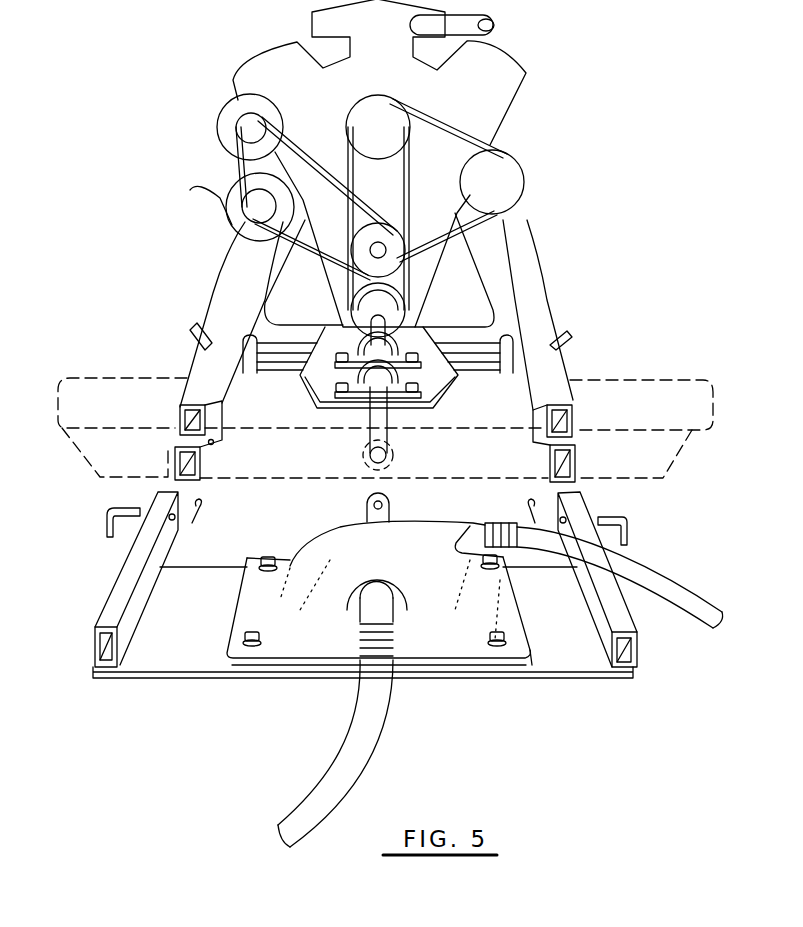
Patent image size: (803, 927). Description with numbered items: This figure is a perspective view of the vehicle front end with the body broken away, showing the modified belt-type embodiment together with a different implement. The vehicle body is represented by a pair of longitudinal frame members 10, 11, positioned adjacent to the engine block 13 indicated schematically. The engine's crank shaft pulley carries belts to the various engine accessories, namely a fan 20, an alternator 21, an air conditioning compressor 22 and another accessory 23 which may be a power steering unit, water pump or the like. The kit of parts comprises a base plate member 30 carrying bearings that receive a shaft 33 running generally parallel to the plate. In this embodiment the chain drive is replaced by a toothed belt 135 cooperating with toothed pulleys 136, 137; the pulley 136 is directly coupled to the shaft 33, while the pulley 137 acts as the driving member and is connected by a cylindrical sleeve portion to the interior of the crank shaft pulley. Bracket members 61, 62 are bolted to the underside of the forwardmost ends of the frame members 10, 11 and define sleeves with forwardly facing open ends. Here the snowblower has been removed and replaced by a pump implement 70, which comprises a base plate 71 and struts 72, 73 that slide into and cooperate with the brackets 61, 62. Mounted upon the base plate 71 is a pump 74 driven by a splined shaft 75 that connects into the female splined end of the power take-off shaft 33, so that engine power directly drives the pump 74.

The longitudinal frame member 10 is at (233, 275).
The longitudinal frame member 11 is at (522, 277).
The engine block 13 is at (490, 78).
The fan 20 is at (365, 117).
The alternator 21 is at (231, 208).
The air conditioning compressor 22 is at (223, 125).
The accessory 23 is at (505, 184).
The base plate member 30 is at (443, 409).
The shaft 33 is at (375, 422).
The bracket member 61 is at (203, 470).
The bracket member 62 is at (575, 482).
The pump implement 70 is at (369, 620).
The base plate 71 is at (563, 649).
The strut 72 is at (130, 568).
The strut 73 is at (618, 615).
The pump 74 is at (400, 552).
The splined shaft 75 is at (368, 512).
The toothed belt 135 is at (408, 284).
The toothed pulley 136 is at (393, 320).
The toothed pulley 137 is at (385, 238).